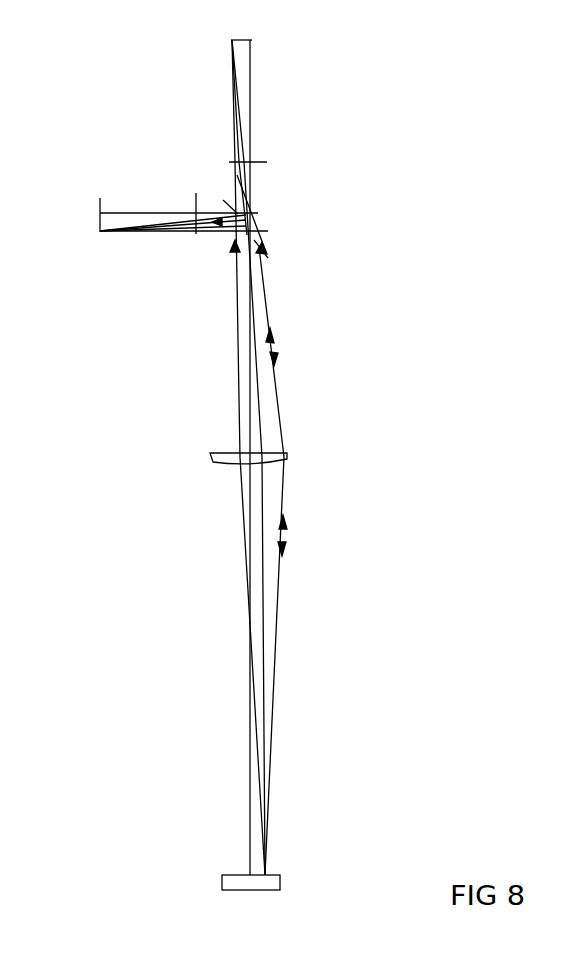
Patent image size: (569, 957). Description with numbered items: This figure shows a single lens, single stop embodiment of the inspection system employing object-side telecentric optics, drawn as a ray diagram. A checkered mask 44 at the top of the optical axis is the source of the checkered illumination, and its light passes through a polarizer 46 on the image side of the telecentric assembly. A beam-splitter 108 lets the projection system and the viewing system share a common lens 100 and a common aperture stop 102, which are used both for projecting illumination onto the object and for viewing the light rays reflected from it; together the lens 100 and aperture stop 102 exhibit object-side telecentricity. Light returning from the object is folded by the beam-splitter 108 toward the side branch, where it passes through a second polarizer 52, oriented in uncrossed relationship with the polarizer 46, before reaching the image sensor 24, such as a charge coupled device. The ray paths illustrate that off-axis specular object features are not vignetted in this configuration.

The checkered mask 44 is at (254, 40).
The polarizer 46 is at (262, 160).
The image sensor 24 is at (100, 201).
The polarizer 52 is at (196, 200).
The beam-splitter 108 is at (258, 232).
The aperture stop 102 is at (265, 252).
The lens 100 is at (215, 452).